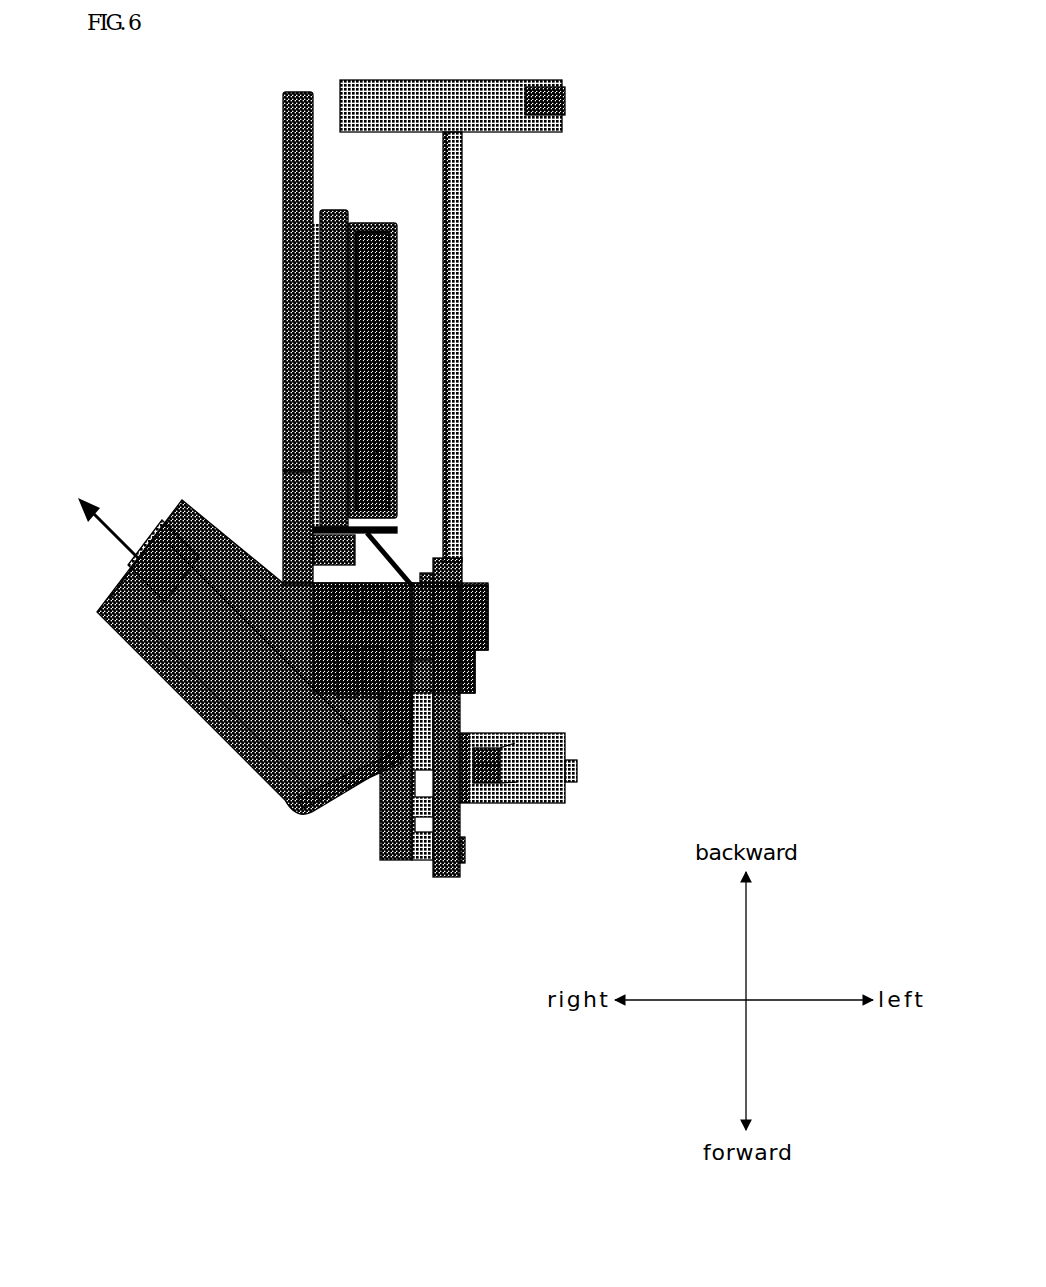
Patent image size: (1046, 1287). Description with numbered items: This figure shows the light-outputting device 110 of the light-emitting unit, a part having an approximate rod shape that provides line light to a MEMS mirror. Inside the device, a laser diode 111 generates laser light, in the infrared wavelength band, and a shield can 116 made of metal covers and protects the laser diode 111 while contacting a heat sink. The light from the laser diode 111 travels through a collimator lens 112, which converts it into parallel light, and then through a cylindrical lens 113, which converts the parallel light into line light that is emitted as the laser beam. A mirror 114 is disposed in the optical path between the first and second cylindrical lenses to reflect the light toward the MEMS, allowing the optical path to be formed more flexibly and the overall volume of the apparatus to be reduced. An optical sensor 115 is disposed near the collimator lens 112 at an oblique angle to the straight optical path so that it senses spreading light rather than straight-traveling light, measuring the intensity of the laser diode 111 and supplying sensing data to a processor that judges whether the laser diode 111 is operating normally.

The light-outputting device 110 is at (298, 501).
The laser diode 111 is at (283, 395).
The collimator lens 112 is at (283, 517).
The cylindrical lens 113 is at (318, 713).
The mirror 114 is at (337, 805).
The optical sensor 115 is at (458, 568).
The shield can 116 is at (397, 365).